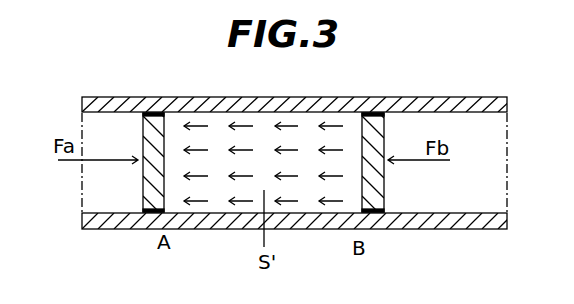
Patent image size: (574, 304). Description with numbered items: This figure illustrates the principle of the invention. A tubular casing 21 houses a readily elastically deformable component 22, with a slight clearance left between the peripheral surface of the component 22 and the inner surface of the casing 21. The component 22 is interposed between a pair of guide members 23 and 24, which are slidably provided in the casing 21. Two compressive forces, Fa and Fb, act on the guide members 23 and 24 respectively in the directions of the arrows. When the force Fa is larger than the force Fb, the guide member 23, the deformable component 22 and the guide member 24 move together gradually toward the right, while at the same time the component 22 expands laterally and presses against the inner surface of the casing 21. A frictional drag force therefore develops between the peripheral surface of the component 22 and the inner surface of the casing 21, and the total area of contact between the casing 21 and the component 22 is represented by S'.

The tubular casing 21 is at (333, 107).
The elastically deformable component 22 is at (218, 133).
The guide member 23 is at (147, 200).
The guide member 24 is at (382, 183).